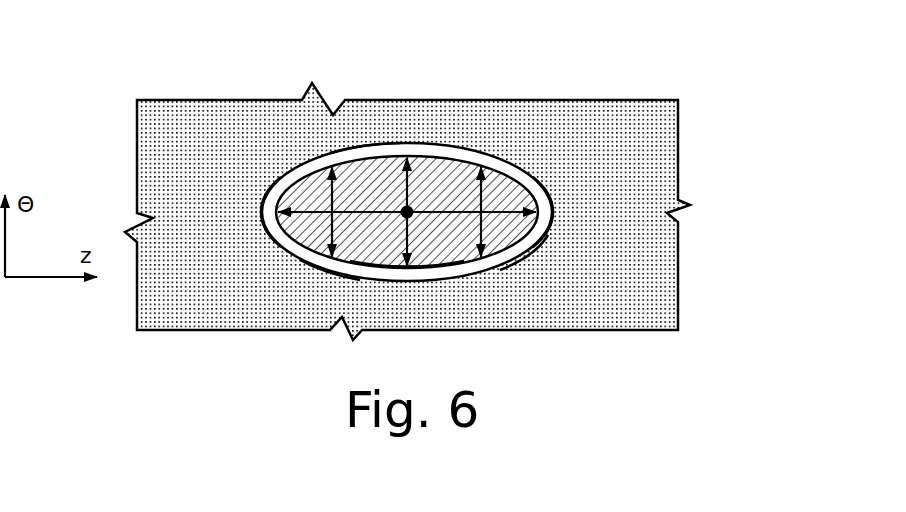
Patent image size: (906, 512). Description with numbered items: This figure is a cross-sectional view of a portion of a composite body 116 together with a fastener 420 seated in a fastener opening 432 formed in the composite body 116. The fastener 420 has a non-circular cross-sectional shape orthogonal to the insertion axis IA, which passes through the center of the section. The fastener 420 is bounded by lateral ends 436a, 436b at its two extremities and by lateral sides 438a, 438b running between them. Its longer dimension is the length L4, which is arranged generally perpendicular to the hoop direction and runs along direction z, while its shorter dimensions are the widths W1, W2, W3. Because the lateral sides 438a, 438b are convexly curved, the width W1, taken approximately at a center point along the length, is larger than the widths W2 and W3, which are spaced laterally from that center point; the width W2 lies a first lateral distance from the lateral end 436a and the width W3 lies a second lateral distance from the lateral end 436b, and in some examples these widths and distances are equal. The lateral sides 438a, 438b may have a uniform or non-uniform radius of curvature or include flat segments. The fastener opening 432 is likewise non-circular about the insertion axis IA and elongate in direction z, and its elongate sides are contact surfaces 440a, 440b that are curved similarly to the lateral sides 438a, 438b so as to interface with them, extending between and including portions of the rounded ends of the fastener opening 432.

The composite body 116 is at (170, 156).
The fastener opening 432 is at (545, 177).
The lateral side 438a is at (386, 157).
The lateral side 438b is at (385, 270).
The lateral end 436a is at (270, 207).
The lateral end 436b is at (540, 223).
The contact surface 440a is at (360, 148).
The contact surface 440b is at (323, 267).
The fastener 420 is at (540, 228).
The length L4 is at (330, 192).
The width W1 is at (418, 190).
The width W2 is at (327, 235).
The width W3 is at (483, 240).
The insertion axis IA is at (410, 218).